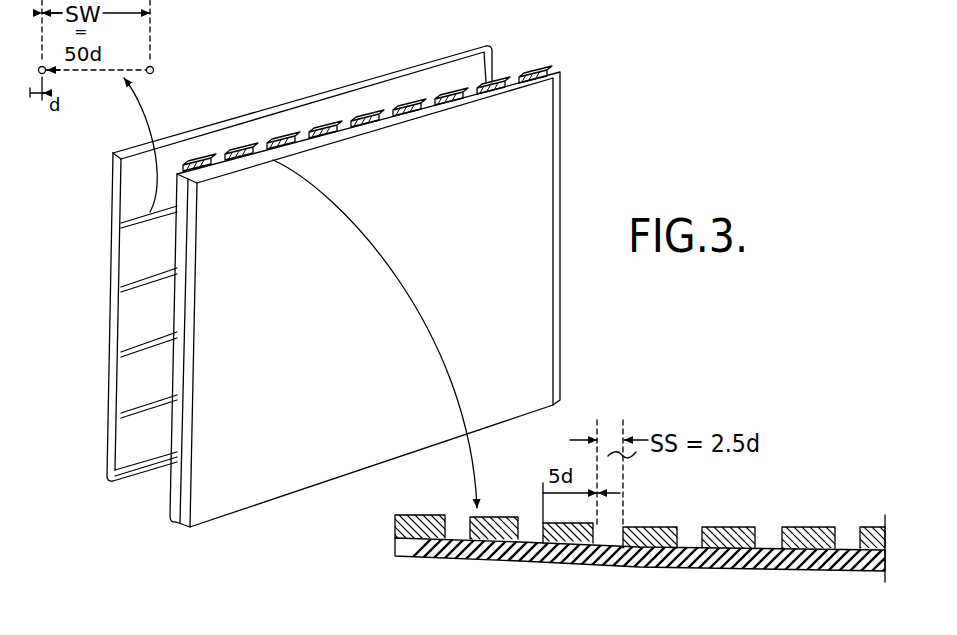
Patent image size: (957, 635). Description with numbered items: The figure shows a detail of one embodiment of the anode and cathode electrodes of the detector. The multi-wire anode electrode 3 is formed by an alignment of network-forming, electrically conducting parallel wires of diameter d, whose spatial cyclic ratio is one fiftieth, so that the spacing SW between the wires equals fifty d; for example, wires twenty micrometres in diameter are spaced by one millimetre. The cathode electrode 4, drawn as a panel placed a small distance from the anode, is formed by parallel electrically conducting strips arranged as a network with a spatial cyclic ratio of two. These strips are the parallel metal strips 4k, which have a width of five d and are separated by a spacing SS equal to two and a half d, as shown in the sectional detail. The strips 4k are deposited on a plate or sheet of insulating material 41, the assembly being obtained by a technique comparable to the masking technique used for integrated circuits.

The multi-wire anode electrode 3 is at (268, 113).
The cathode electrode 4 is at (208, 475).
The parallel metal strips 4k is at (662, 528).
The plate or sheet of insulating material 41 is at (693, 557).